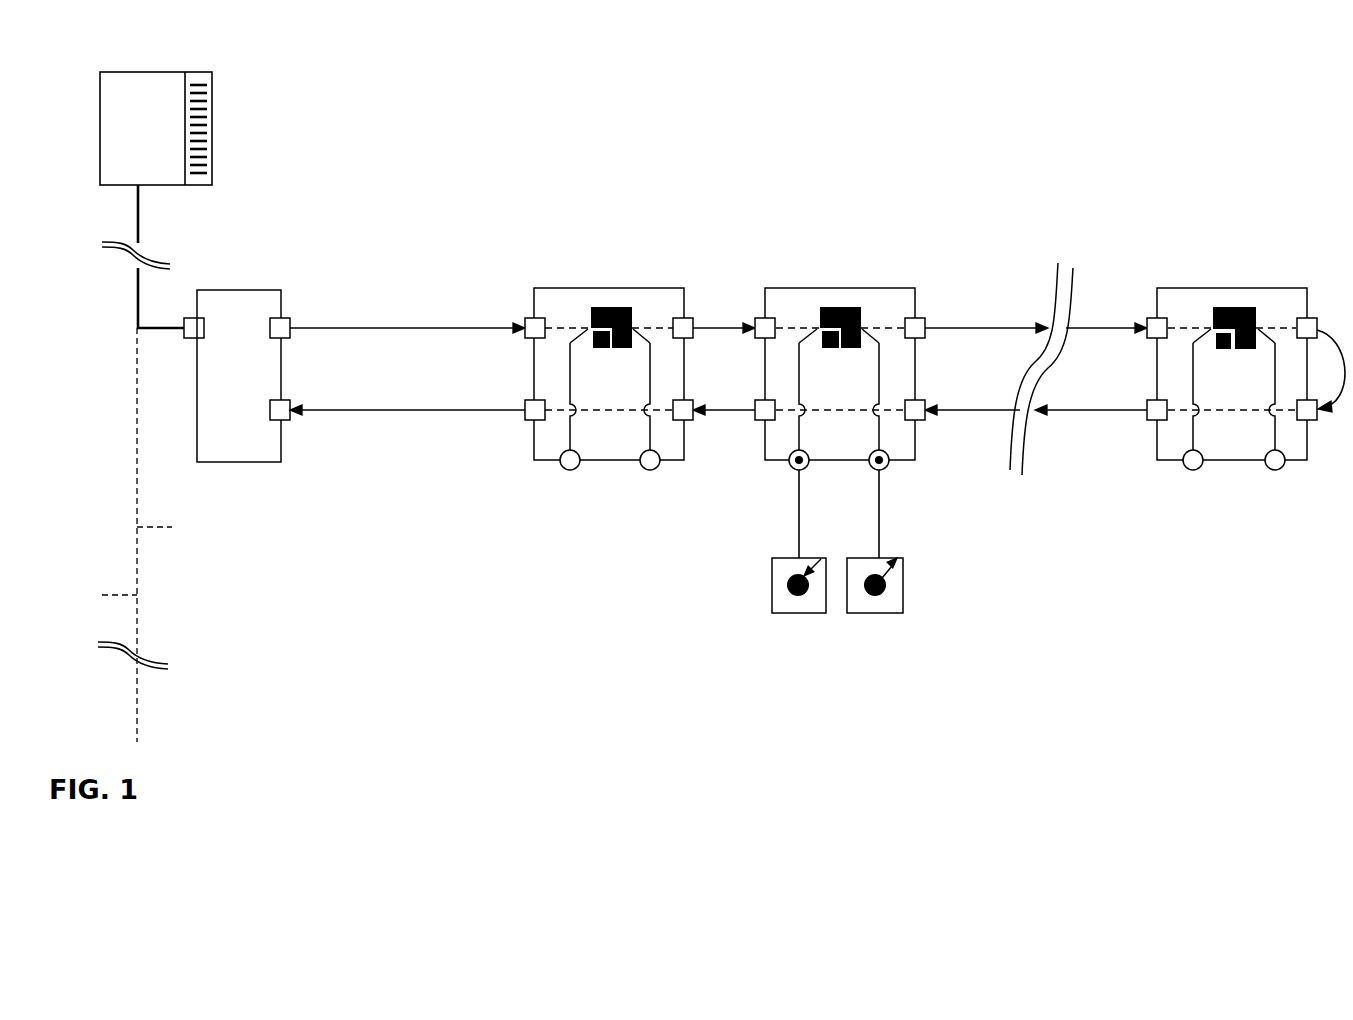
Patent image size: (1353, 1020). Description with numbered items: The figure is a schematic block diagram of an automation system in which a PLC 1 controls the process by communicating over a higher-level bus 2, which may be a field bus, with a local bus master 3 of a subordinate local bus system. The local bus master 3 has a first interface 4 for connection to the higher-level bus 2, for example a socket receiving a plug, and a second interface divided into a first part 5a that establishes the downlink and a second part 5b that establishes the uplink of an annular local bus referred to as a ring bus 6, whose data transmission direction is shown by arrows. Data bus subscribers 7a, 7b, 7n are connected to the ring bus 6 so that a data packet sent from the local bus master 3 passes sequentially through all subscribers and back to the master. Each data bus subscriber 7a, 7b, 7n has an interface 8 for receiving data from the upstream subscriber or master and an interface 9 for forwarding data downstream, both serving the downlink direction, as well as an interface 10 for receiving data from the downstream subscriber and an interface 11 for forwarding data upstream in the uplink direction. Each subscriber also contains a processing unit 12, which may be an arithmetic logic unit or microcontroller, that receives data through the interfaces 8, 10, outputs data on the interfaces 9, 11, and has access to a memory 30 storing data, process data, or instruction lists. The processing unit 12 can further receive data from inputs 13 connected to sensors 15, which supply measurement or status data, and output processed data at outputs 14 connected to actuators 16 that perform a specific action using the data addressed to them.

The PLC 1 is at (156, 128).
The higher-level bus 2 is at (137, 292).
The local bus master 3 is at (239, 376).
The first interface 4 is at (193, 331).
The first part of the second interface 5a is at (283, 318).
The second part of the second interface 5b is at (283, 421).
The ring bus 6 is at (393, 326).
The data bus subscriber 7a is at (611, 339).
The data bus subscriber 7b is at (840, 379).
The data bus subscriber 7n is at (1246, 379).
The interface 8 is at (534, 318).
The interface 9 is at (684, 318).
The interface 10 is at (684, 420).
The interface 11 is at (534, 420).
The processing unit 12 is at (627, 270).
The inputs 13 is at (571, 469).
The outputs 14 is at (650, 469).
The sensors 15 is at (804, 614).
The actuators 16 is at (877, 614).
The memory 30 is at (600, 352).